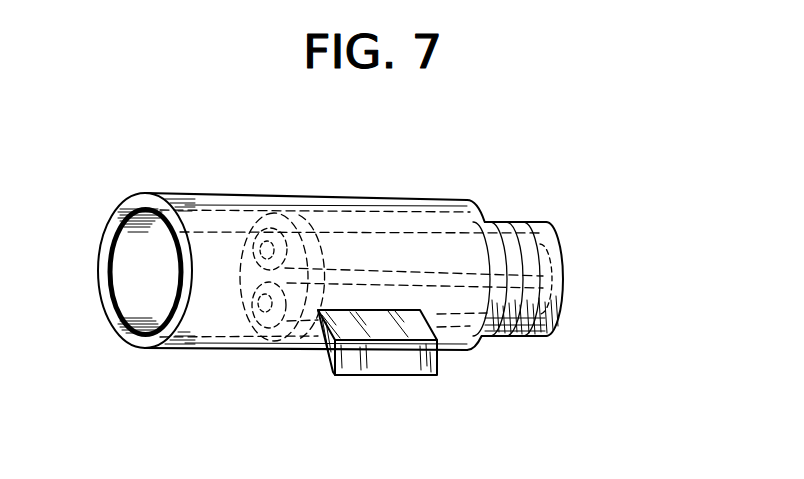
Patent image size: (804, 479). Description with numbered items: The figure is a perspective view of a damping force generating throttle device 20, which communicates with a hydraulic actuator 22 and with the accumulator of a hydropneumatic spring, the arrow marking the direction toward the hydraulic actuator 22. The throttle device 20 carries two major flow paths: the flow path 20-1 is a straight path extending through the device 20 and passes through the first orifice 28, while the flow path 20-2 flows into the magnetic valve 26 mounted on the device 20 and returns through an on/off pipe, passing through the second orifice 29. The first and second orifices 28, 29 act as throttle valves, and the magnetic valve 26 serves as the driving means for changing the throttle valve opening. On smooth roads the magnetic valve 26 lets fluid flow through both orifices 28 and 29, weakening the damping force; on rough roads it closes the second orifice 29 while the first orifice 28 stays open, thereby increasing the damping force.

The throttle device 20 is at (417, 198).
The flow path 20-1 is at (262, 230).
The flow path 20-2 is at (231, 330).
The first orifice 28 is at (279, 228).
The second orifice 29 is at (277, 333).
The magnetic valve 26 is at (389, 366).
The hydraulic actuator 22 is at (573, 280).